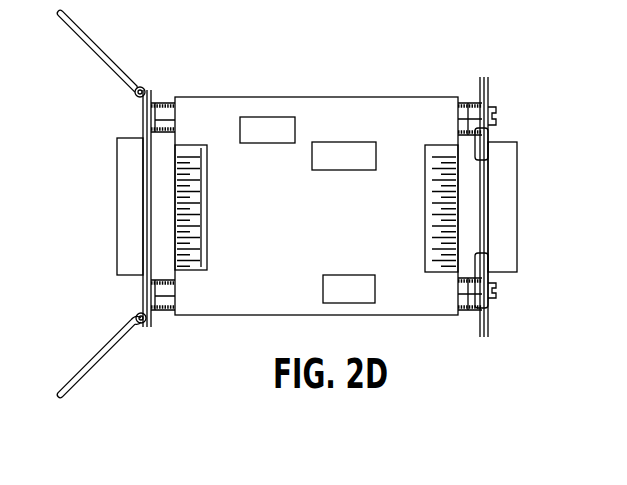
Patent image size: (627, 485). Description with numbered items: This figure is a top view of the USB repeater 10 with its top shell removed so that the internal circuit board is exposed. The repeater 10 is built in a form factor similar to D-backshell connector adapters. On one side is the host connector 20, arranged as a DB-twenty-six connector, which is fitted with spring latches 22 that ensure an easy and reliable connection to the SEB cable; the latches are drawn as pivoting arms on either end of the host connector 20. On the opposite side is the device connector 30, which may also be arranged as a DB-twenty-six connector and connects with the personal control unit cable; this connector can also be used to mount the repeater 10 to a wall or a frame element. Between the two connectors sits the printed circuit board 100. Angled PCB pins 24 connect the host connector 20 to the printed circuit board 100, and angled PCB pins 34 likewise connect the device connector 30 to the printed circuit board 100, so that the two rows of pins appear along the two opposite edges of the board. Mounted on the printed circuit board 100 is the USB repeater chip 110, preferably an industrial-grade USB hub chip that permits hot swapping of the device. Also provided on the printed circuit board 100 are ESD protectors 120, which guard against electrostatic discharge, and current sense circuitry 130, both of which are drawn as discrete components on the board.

The USB repeater 10 is at (205, 36).
The host connector 20 is at (127, 180).
The spring latches 22 is at (85, 43).
The angled PCB pins 24 is at (198, 140).
The device connector 30 is at (507, 183).
The angled PCB pins 34 is at (437, 145).
The printed circuit board 100 is at (405, 288).
The USB repeater chip 110 is at (347, 142).
The ESD protectors 120 is at (285, 133).
The current sense circuitry 130 is at (340, 288).